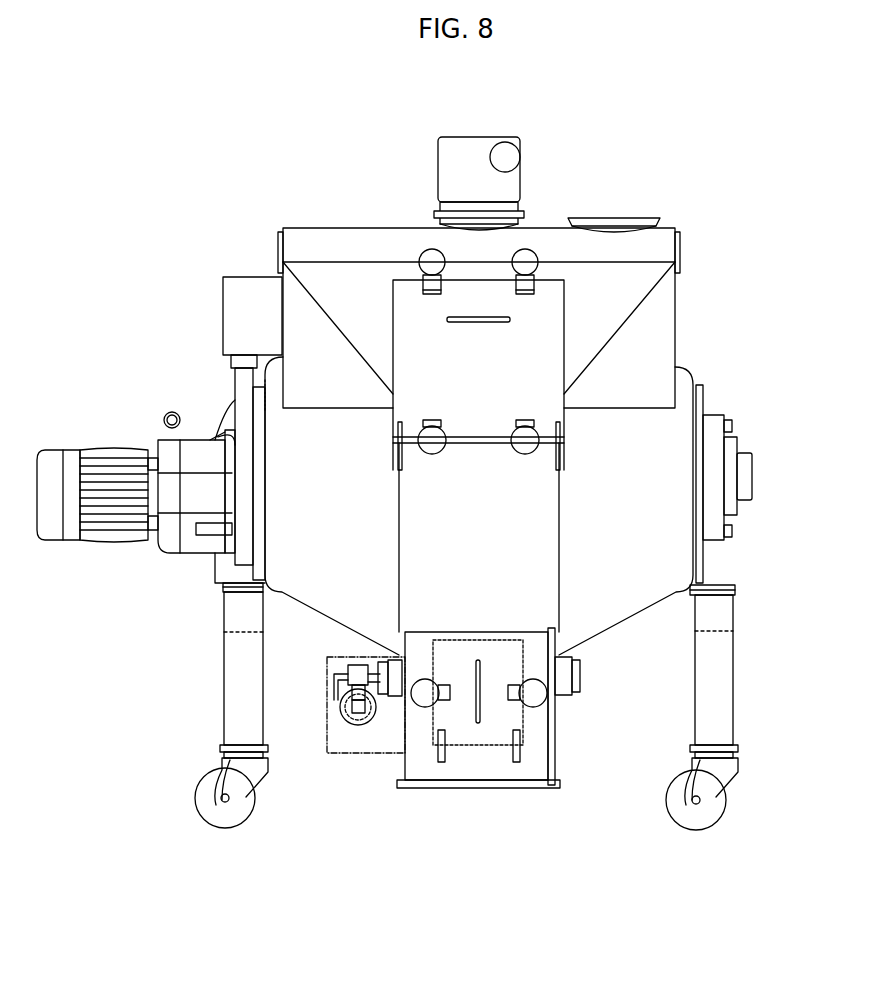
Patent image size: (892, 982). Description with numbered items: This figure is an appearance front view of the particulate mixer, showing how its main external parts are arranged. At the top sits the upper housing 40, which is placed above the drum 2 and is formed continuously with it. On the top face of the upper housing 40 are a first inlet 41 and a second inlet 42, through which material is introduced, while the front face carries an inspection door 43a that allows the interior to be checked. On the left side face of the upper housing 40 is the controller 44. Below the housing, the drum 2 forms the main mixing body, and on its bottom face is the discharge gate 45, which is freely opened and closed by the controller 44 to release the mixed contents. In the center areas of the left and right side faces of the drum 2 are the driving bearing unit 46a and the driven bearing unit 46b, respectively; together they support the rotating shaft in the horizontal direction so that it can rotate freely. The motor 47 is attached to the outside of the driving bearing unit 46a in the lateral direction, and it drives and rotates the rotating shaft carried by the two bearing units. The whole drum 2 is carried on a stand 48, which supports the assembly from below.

The drum 2 is at (683, 383).
The upper housing 40 is at (660, 314).
The first inlet 41 is at (466, 144).
The second inlet 42 is at (612, 216).
The inspection door 43a is at (410, 325).
The controller 44 is at (240, 302).
The discharge gate 45 is at (508, 720).
The driving bearing unit 46a is at (245, 402).
The driven bearing unit 46b is at (727, 455).
The motor 47 is at (102, 462).
The stand 48 is at (722, 672).